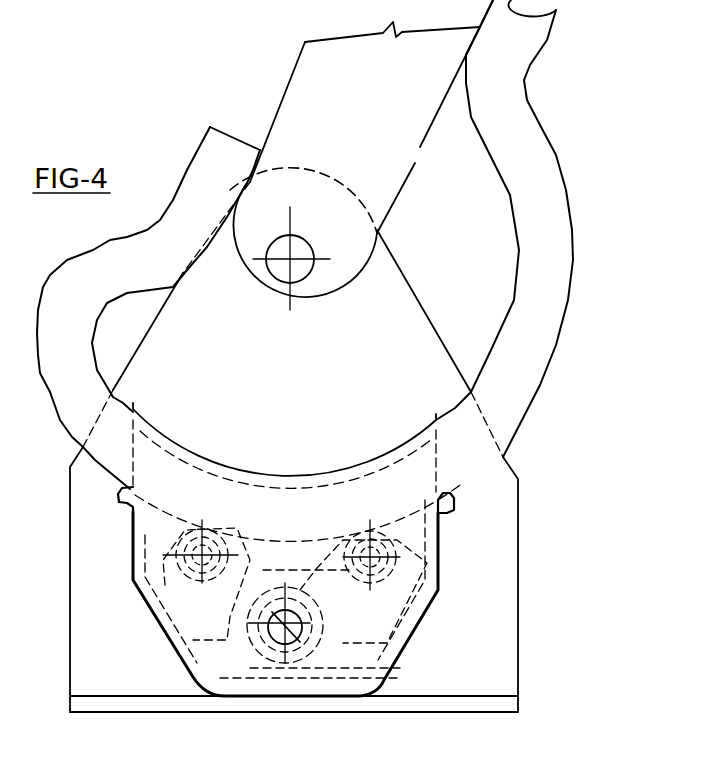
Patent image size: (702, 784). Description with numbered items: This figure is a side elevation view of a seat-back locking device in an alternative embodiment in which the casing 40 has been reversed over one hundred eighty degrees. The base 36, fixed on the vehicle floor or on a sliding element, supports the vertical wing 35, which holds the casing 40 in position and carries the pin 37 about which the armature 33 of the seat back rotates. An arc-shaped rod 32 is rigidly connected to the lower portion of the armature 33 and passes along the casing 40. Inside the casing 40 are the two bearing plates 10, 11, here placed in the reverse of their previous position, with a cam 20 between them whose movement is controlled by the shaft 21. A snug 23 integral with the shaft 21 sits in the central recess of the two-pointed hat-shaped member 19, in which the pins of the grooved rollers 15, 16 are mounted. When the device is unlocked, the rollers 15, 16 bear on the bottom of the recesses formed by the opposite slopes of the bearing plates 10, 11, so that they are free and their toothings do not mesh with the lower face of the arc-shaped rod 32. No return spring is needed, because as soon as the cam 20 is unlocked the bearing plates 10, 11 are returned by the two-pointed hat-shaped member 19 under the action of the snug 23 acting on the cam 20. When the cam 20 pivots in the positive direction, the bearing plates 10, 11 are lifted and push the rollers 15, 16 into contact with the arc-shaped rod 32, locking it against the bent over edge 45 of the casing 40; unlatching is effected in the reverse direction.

The bearing plate 10 is at (388, 612).
The bearing plate 11 is at (197, 624).
The roller 15 is at (215, 535).
The roller 16 is at (384, 569).
The two-pointed hat-shaped member 19 is at (378, 685).
The cam 20 is at (248, 647).
The shaft 21 is at (297, 652).
The snug 23 is at (267, 650).
The arc-shaped rod 32 is at (553, 240).
The armature 33 is at (307, 105).
The vertical wing 35 is at (499, 547).
The base 36 is at (508, 707).
The pin 37 is at (305, 273).
The casing 40 is at (162, 619).
The bent over edge 45 is at (270, 477).